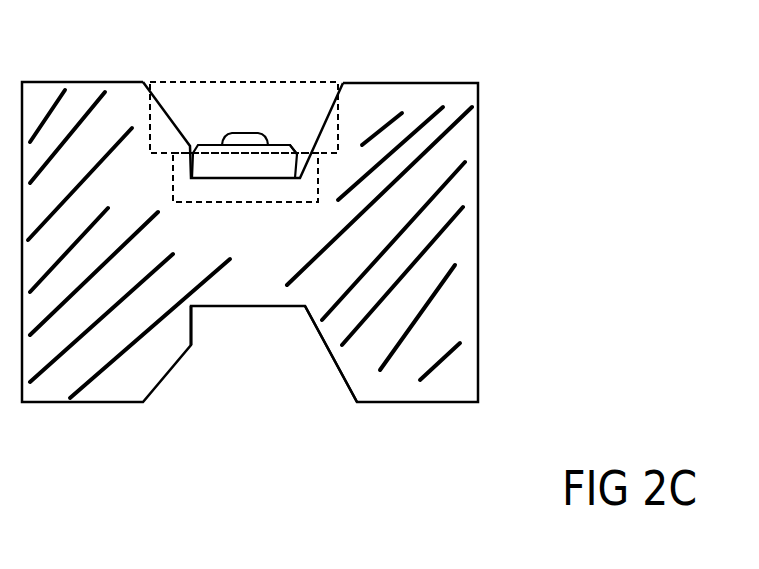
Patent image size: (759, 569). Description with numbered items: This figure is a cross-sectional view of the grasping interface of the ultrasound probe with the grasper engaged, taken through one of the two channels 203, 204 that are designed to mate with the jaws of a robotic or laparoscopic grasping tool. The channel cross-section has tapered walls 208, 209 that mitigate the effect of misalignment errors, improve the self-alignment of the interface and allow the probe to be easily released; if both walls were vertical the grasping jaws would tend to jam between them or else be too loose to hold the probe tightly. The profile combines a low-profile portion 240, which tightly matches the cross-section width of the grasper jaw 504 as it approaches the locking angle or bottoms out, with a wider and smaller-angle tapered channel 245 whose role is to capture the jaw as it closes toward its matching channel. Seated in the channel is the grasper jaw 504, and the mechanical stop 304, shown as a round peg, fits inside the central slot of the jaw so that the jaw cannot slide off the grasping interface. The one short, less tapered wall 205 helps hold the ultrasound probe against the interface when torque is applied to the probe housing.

The channel 203 is at (250, 306).
The channel 204 is at (262, 178).
The short less tapered wall 205 is at (189, 158).
The tapered wall 208 is at (168, 105).
The tapered wall 209 is at (343, 85).
The low-profile portion 240 is at (192, 202).
The tapered channel 245 is at (214, 82).
The mechanical stop 304 is at (228, 130).
The grasping jaw 504 is at (284, 146).